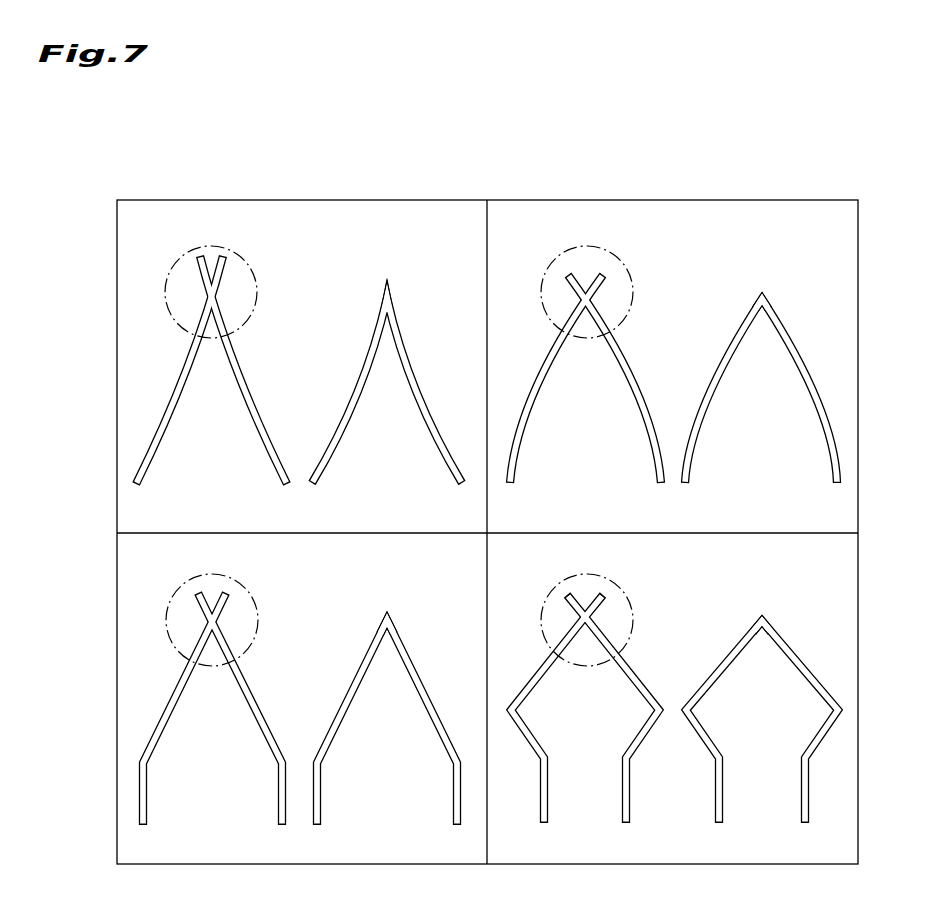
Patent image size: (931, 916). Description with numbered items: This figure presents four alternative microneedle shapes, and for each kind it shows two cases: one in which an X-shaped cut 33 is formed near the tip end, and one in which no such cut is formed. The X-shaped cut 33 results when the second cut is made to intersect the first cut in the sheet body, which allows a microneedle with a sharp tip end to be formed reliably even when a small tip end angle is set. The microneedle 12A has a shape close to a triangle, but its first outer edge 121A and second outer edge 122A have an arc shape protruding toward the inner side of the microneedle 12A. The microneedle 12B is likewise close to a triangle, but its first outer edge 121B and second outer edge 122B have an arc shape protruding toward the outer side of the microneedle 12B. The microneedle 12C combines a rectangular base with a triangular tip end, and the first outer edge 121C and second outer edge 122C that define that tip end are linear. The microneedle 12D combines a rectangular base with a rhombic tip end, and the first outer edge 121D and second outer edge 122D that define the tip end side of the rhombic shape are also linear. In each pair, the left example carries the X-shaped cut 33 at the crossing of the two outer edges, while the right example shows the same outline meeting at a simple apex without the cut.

The X-shaped cut 33 is at (257, 273).
The microneedle 12A is at (300, 370).
The first outer edge 121A is at (187, 380).
The second outer edge 122A is at (245, 407).
The microneedle 12B is at (673, 379).
The first outer edge 121B is at (538, 377).
The second outer edge 122B is at (648, 427).
The microneedle 12C is at (300, 709).
The first outer edge 121C is at (178, 692).
The second outer edge 122C is at (270, 743).
The microneedle 12D is at (680, 709).
The first outer edge 121D is at (547, 668).
The second outer edge 122D is at (813, 628).